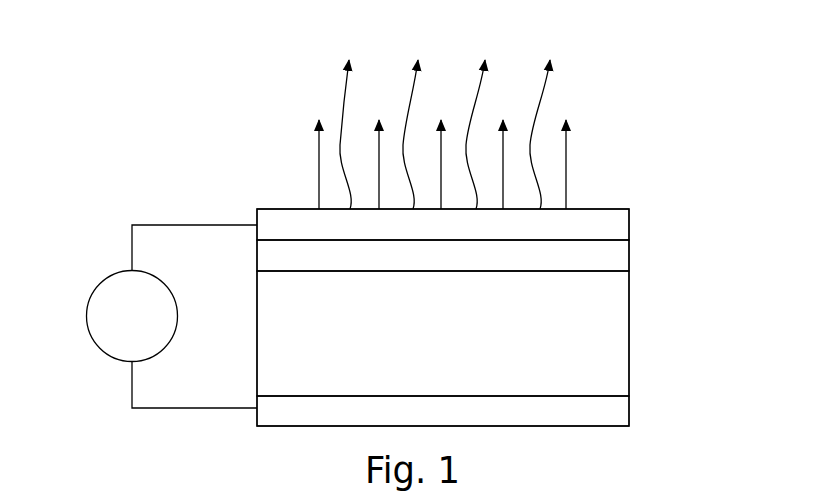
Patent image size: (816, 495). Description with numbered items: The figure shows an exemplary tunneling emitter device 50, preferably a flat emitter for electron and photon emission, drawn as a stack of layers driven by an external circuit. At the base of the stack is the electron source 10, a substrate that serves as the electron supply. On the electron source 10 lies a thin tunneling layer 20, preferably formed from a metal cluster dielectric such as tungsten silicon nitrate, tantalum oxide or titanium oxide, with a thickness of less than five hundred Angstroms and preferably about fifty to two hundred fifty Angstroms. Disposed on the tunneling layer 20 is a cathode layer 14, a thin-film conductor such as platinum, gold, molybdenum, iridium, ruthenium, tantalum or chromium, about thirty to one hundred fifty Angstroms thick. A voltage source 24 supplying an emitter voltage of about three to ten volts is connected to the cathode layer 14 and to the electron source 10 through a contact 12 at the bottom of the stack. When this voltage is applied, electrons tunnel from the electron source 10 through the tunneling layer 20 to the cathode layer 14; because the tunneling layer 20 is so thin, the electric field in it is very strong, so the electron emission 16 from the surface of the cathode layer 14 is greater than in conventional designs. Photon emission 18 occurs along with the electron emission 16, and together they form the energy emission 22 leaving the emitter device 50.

The electron source 10 is at (629, 331).
The contact 12 is at (629, 415).
The cathode layer 14 is at (629, 222).
The electron emission 16 is at (597, 137).
The photon emission 18 is at (597, 74).
The tunneling layer 20 is at (629, 262).
The energy emission 22 is at (711, 58).
The voltage source 24 is at (96, 291).
The emitter device 50 is at (259, 178).